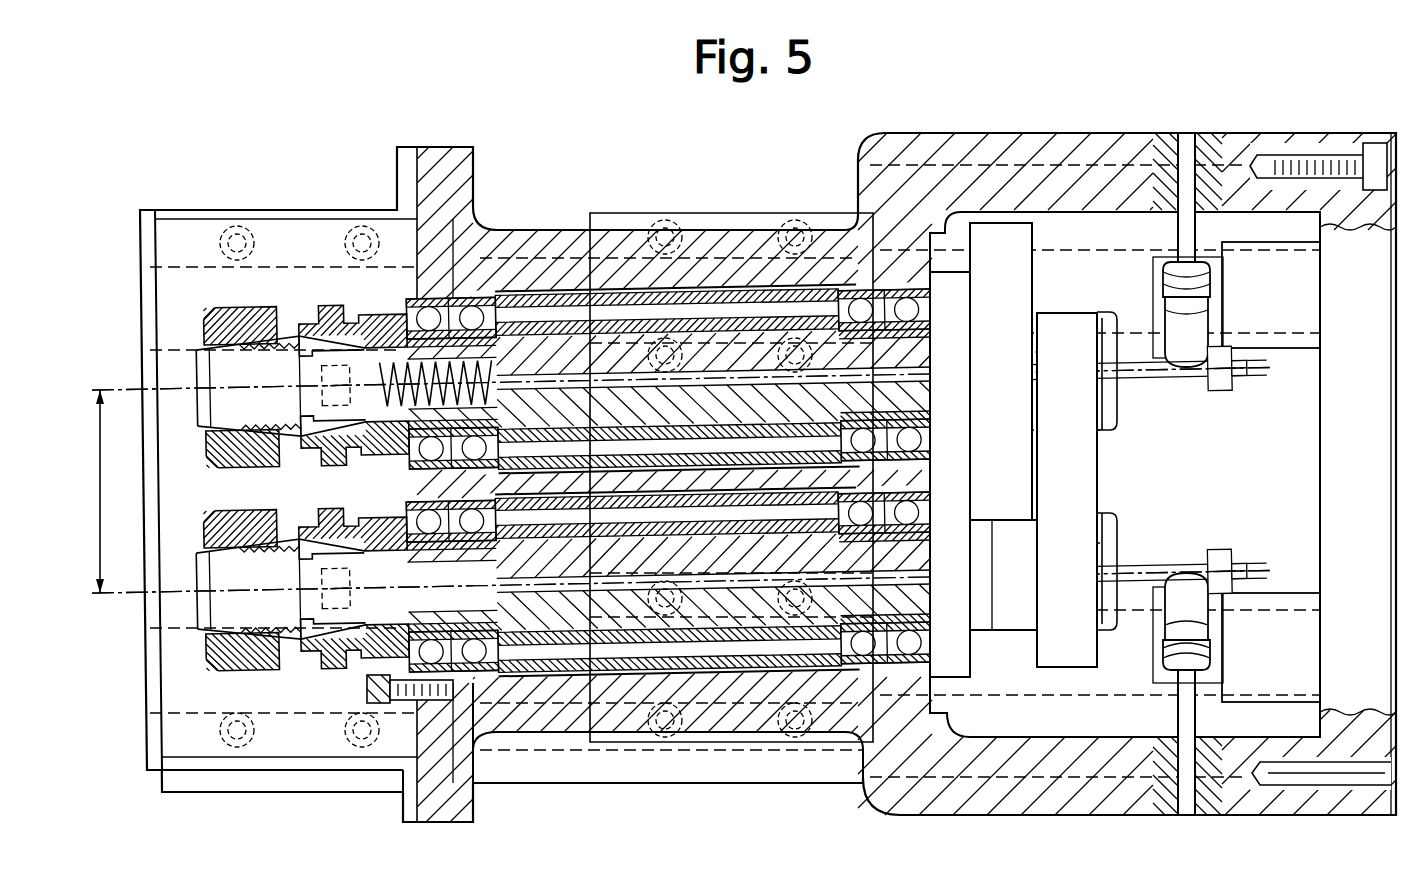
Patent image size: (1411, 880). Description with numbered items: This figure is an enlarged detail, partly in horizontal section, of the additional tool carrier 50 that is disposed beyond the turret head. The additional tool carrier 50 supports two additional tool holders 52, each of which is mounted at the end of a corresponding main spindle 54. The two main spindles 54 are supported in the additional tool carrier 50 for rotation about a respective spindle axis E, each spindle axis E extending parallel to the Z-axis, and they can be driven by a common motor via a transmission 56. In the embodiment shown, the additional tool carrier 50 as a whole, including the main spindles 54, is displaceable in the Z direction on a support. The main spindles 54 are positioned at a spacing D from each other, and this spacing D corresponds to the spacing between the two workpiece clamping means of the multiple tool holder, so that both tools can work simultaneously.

The additional tool carrier 50 is at (214, 178).
The additional tool holder 52 is at (321, 337).
The main spindle 54 is at (556, 330).
The transmission 56 is at (1112, 488).
The spindle axis E is at (717, 373).
The spacing D is at (100, 492).